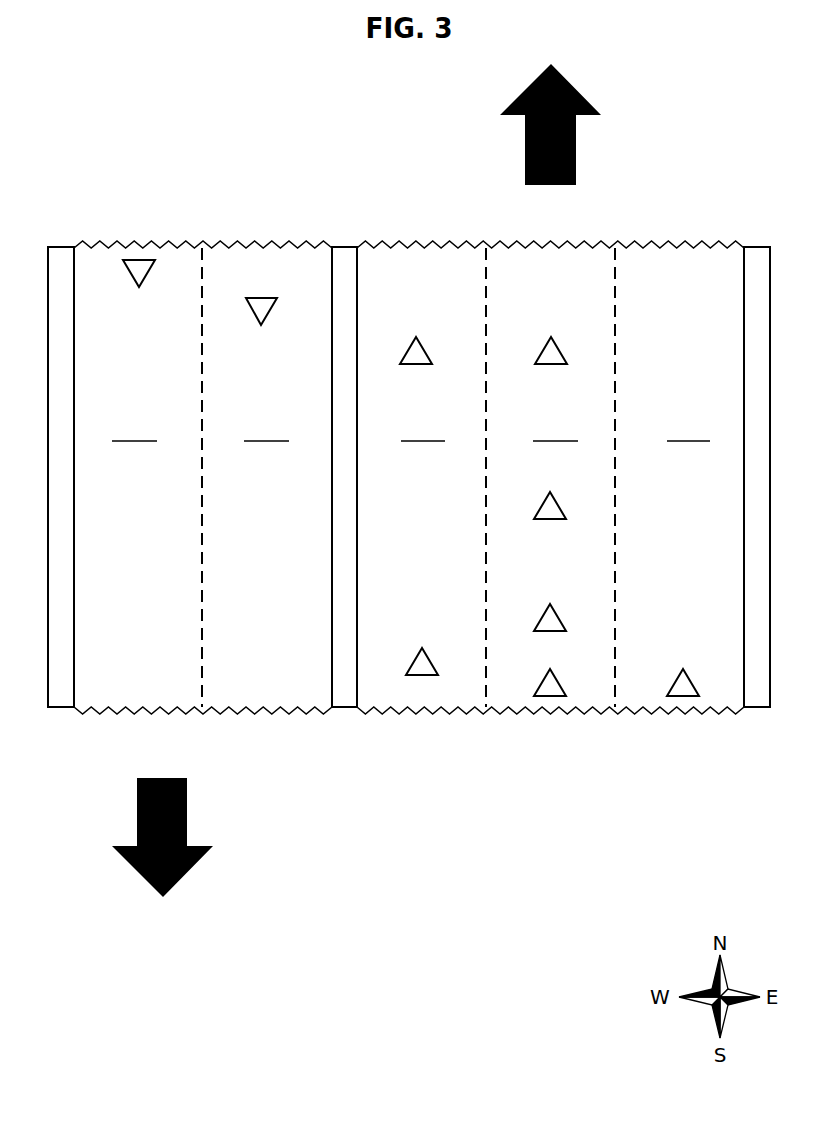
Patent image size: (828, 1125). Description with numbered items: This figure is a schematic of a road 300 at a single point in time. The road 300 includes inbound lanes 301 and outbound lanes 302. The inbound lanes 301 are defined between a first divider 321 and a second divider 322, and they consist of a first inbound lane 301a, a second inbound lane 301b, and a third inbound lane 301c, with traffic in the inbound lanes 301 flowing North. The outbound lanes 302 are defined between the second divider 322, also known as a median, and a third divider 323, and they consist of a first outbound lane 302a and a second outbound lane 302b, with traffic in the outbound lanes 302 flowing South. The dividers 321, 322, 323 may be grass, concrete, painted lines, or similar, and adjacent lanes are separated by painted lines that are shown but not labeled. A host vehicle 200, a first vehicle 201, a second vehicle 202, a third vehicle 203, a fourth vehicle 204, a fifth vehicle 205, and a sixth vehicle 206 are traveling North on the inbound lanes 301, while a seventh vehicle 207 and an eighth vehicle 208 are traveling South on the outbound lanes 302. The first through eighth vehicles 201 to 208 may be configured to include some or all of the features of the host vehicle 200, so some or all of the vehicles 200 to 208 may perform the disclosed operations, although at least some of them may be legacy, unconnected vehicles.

The road 300 is at (728, 120).
The inbound lanes 301 is at (550, 453).
The first inbound lane 301a is at (443, 477).
The second inbound lane 301b is at (574, 477).
The third inbound lane 301c is at (688, 431).
The outbound lanes 302 is at (203, 453).
The first outbound lane 302a is at (266, 431).
The second outbound lane 302b is at (157, 477).
The host vehicle 200 is at (552, 617).
The first vehicle 201 is at (424, 661).
The second vehicle 202 is at (552, 505).
The third vehicle 203 is at (685, 682).
The fourth vehicle 204 is at (552, 682).
The fifth vehicle 205 is at (418, 350).
The sixth vehicle 206 is at (553, 350).
The seventh vehicle 207 is at (133, 268).
The eighth vehicle 208 is at (263, 313).
The first divider 321 is at (756, 697).
The second divider 322 is at (344, 697).
The third divider 323 is at (60, 697).